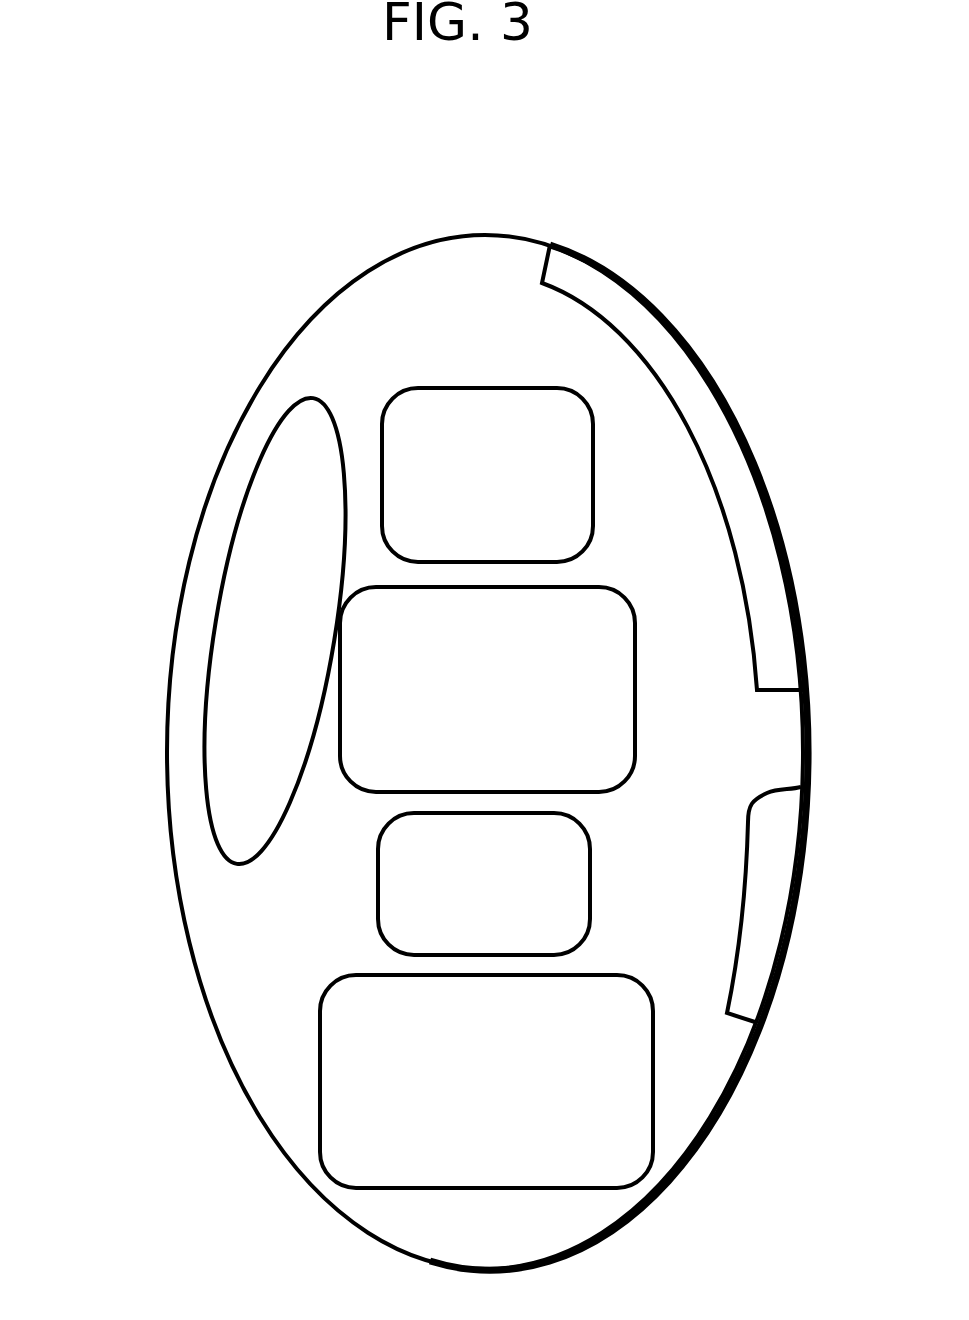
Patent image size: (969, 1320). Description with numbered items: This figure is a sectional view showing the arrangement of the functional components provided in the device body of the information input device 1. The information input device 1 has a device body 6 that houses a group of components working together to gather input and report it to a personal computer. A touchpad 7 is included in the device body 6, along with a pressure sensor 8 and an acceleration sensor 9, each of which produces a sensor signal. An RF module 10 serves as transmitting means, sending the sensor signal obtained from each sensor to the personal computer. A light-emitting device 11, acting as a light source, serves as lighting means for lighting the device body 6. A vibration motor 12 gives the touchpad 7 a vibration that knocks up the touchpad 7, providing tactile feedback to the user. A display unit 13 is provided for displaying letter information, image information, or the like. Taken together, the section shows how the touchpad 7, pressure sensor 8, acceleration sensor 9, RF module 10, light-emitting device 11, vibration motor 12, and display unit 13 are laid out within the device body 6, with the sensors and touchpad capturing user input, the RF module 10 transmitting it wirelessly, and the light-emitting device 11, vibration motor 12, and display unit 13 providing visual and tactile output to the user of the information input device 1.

The information input device 1 is at (163, 521).
The device body 6 is at (722, 1107).
The touchpad 7 is at (728, 465).
The pressure sensor 8 is at (247, 628).
The acceleration sensor 9 is at (398, 763).
The RF module 10 is at (343, 1133).
The light-emitting device 11 is at (400, 913).
The vibration motor 12 is at (452, 407).
The display unit 13 is at (783, 891).